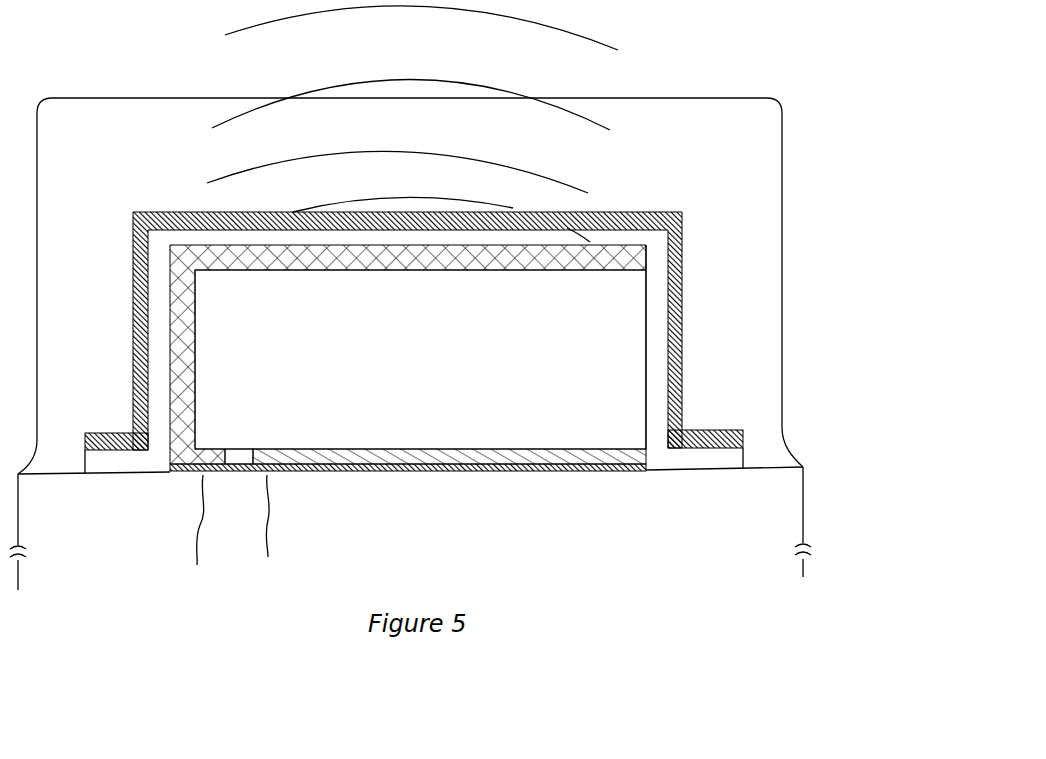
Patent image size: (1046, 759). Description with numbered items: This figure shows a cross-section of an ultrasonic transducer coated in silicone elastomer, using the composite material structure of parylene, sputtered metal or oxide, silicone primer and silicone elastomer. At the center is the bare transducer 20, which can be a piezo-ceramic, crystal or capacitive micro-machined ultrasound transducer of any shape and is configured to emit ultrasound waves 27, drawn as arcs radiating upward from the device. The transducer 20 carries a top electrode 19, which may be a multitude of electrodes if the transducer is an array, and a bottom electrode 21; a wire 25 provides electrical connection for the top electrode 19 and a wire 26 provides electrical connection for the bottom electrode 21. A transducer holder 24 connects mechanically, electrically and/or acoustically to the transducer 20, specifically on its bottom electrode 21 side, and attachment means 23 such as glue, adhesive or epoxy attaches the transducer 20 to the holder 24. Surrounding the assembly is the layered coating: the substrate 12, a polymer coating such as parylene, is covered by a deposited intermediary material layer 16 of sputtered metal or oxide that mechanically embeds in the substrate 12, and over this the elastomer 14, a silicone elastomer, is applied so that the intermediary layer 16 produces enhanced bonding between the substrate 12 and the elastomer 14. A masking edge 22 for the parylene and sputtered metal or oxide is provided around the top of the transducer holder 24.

The substrate 12 is at (658, 285).
The elastomer 14 is at (728, 155).
The deposited intermediary material layer/film 16 is at (667, 208).
The top electrode 19 is at (647, 245).
The bare transducer 20 is at (622, 338).
The bottom electrode 21 is at (610, 450).
The masking edge 22 is at (745, 420).
The attachment means 23 is at (632, 477).
The transducer holder 24 is at (750, 528).
The wire 25 is at (187, 554).
The wire 26 is at (282, 528).
The ultrasound waves 27 is at (595, 185).